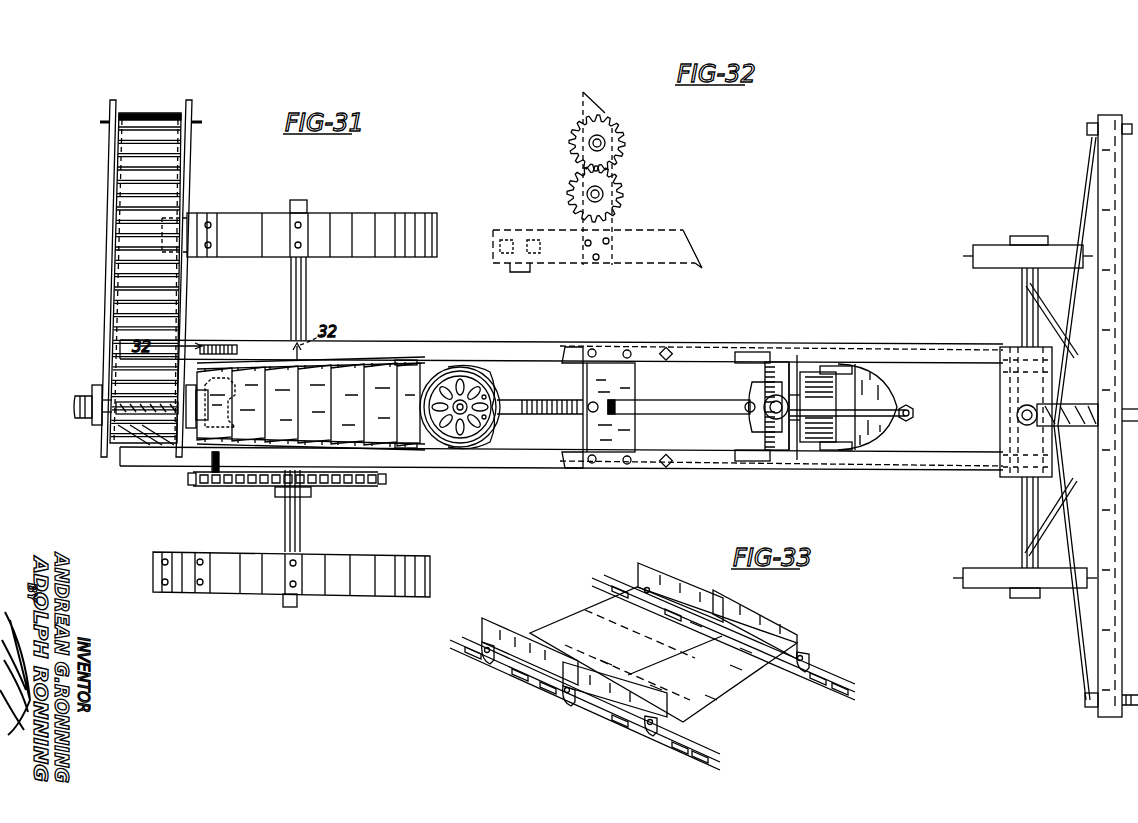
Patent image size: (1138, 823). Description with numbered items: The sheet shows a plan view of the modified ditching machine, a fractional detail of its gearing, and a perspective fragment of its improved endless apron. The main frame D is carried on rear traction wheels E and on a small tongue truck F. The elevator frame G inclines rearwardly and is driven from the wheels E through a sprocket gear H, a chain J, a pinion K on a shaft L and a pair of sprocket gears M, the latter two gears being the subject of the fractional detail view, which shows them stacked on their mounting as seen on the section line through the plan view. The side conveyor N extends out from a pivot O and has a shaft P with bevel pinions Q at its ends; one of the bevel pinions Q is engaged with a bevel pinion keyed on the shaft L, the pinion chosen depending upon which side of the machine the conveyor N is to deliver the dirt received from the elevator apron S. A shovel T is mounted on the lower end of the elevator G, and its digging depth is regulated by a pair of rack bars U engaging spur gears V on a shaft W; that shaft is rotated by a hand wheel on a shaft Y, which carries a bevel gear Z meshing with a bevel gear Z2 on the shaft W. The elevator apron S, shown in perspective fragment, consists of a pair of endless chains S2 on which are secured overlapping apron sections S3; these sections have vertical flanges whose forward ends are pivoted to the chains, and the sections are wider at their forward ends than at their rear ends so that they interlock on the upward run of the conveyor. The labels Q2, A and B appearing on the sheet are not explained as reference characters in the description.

In FIG. 31, the side conveyor N is at (120, 268).
In FIG. 31, the rear traction wheels E is at (406, 232).
In FIG. 31, the sprocket gears M is at (224, 338).
In FIG. 32, the sprocket gears M is at (600, 184).
In FIG. 31, the pinion K is at (226, 378).
In FIG. 31, the shaft P is at (98, 392).
In FIG. 31, the bevel pinions Q is at (80, 402).
In FIG. 31, the paddle clamp Q2 is at (220, 406).
In FIG. 31, the pivot O is at (128, 420).
In FIG. 31, the shaft L is at (214, 457).
In FIG. 32, the shaft L is at (600, 196).
In FIG. 31, the chain J is at (258, 486).
In FIG. 31, the sprocket gear H is at (372, 486).
In FIG. 31, the elevator apron S is at (311, 403).
In FIG. 33, the elevator apron S is at (663, 654).
In FIG. 31, the endless chains S2 is at (403, 360).
In FIG. 33, the endless chains S2 is at (835, 687).
In FIG. 33, the apron sections S3 is at (700, 612).
In FIG. 31, the shaft Y is at (613, 400).
In FIG. 31, the elevator frame G is at (745, 447).
In FIG. 31, the bevel gear Z is at (776, 362).
In FIG. 31, the spur gears V is at (797, 362).
In FIG. 31, the rack bars U is at (824, 370).
In FIG. 31, the shovel T is at (862, 385).
In FIG. 31, the shaft W is at (872, 396).
In FIG. 31, the bolt B is at (914, 413).
In FIG. 31, the rod A is at (868, 416).
In FIG. 31, the bevel gear Z2 is at (797, 456).
In FIG. 31, the main frame D is at (905, 470).
In FIG. 32, the main frame D is at (680, 255).
In FIG. 31, the tongue truck F is at (347, 582).